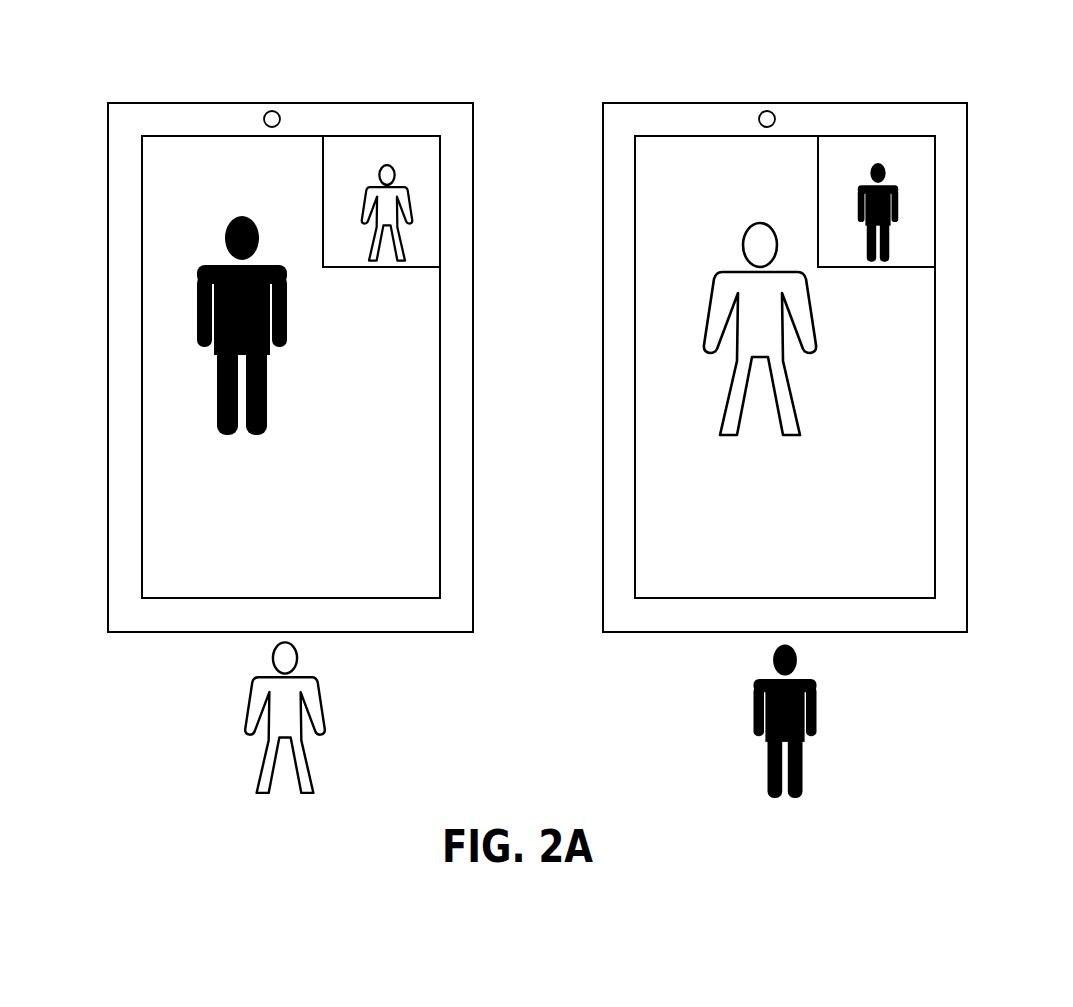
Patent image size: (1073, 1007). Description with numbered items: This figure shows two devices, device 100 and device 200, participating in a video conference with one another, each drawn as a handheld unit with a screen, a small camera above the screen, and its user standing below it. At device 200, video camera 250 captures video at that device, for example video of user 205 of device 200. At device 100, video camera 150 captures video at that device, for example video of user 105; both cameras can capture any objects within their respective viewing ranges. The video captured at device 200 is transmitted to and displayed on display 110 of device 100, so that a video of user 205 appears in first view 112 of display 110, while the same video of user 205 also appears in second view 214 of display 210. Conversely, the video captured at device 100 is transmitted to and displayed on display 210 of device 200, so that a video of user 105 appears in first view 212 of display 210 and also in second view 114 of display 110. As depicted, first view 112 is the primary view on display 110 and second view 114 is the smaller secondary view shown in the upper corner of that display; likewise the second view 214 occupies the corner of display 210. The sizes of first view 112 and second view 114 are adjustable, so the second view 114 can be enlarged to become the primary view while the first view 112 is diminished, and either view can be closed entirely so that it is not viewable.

The device 100 is at (867, 74).
The user 105 is at (804, 825).
The display 110 is at (703, 135).
The first view 112 is at (913, 320).
The second view 114 is at (915, 248).
The video camera 150 is at (763, 113).
The device 200 is at (337, 86).
The user 205 is at (304, 825).
The display 210 is at (197, 134).
The first view 212 is at (415, 340).
The second view 214 is at (415, 245).
The video camera 250 is at (268, 113).